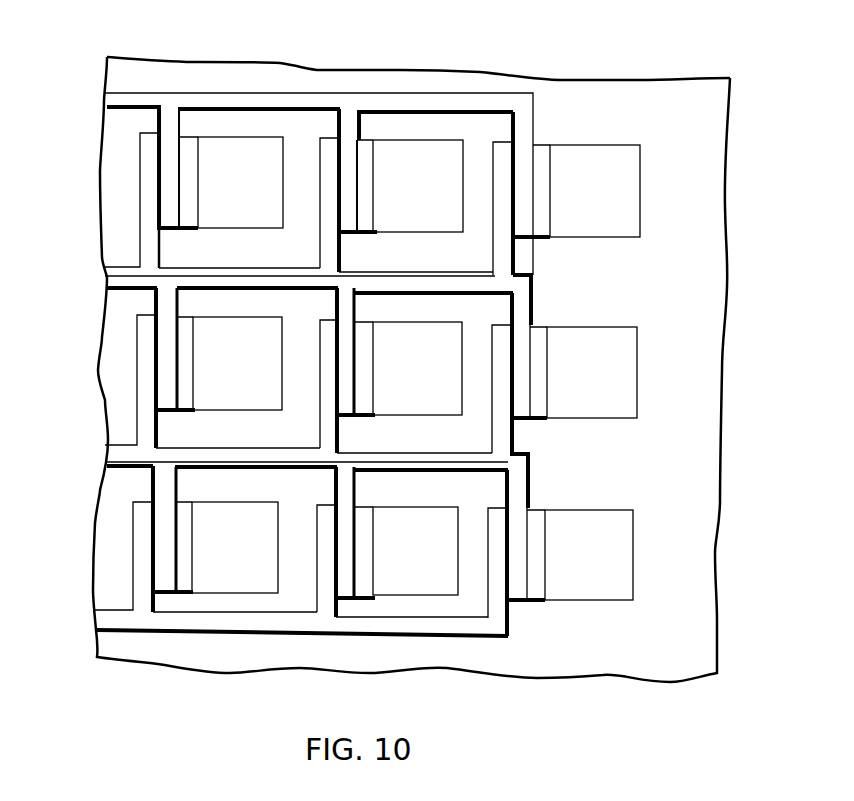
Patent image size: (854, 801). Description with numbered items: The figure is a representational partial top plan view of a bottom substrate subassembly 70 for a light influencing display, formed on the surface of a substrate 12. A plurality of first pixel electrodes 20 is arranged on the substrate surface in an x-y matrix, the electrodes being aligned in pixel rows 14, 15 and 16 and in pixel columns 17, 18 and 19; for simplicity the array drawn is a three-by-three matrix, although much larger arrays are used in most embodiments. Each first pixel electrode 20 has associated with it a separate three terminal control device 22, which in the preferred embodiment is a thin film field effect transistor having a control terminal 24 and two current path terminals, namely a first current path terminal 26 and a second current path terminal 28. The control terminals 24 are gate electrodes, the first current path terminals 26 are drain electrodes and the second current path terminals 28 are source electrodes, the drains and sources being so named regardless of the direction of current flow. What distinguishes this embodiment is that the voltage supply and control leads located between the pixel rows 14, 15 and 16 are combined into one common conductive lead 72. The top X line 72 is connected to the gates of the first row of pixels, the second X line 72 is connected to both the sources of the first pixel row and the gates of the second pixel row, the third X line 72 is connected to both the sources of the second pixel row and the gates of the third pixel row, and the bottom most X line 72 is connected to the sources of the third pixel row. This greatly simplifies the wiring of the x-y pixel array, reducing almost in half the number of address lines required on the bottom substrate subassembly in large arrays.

The substrate 12 is at (708, 286).
The pixel row 14 is at (90, 183).
The pixel row 15 is at (88, 365).
The pixel row 16 is at (76, 542).
The pixel column 17 is at (237, 45).
The pixel column 18 is at (423, 50).
The pixel column 19 is at (593, 60).
The first pixel electrode 20 is at (278, 168).
The three terminal control device 22 is at (131, 170).
The control terminal 24 is at (380, 321).
The first current path terminal 26 is at (192, 167).
The second current path terminal 28 is at (148, 203).
The bottom substrate subassembly 70 is at (752, 104).
The common conductive lead 72 is at (130, 103).